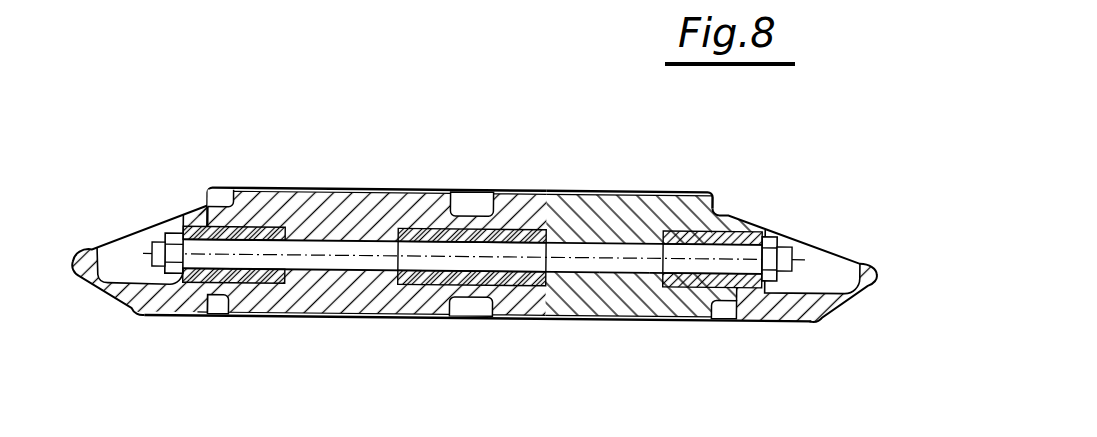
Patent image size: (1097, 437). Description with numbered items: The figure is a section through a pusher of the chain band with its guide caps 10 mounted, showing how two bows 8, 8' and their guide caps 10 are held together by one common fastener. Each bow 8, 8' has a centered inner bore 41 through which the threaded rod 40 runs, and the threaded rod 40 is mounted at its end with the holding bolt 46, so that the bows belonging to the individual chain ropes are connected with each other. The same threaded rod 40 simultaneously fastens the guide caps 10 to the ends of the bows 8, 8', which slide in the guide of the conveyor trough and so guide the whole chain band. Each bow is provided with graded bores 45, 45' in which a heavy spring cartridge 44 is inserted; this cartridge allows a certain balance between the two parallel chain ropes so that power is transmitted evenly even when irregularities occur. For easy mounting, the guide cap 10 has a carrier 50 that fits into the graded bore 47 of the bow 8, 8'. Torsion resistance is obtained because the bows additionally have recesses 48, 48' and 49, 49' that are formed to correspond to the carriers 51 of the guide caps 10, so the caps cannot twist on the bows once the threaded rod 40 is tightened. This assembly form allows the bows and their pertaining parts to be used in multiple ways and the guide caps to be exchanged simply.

The bow 8 is at (655, 211).
The bow 8' is at (364, 208).
The guide cap 10 is at (132, 308).
The threaded rod 40 is at (622, 256).
The inner bore 41 is at (625, 273).
The heavy spring cartridge 44 is at (531, 231).
The graded bore 45 is at (475, 335).
The central bushing end face 45' is at (449, 320).
The holding bolt 46 is at (773, 237).
The graded bore 47 is at (281, 280).
The recess 48 is at (212, 154).
The upper central groove 48' is at (471, 167).
The recess 49 is at (471, 347).
The lower central groove 49' is at (464, 341).
The carrier 50 is at (273, 238).
The carrier 51 is at (213, 314).